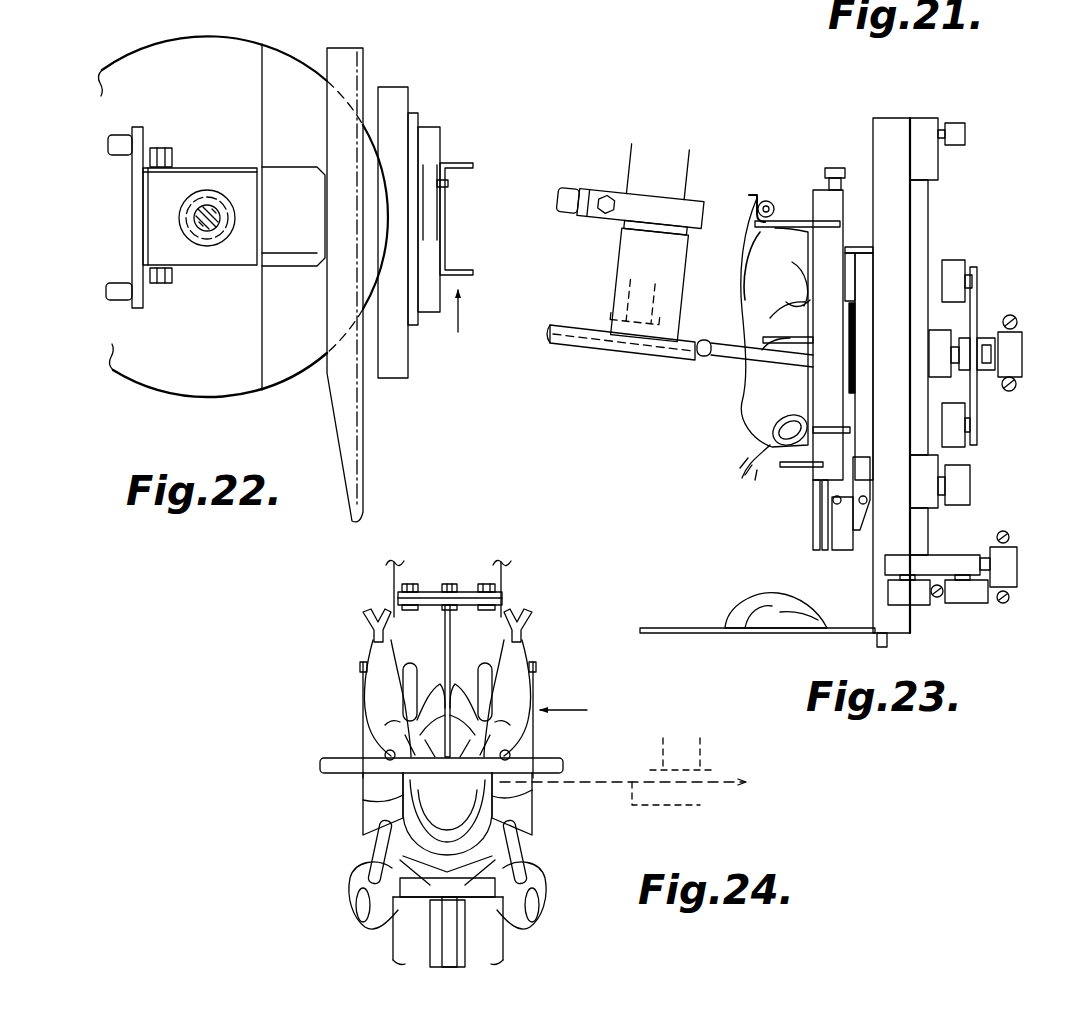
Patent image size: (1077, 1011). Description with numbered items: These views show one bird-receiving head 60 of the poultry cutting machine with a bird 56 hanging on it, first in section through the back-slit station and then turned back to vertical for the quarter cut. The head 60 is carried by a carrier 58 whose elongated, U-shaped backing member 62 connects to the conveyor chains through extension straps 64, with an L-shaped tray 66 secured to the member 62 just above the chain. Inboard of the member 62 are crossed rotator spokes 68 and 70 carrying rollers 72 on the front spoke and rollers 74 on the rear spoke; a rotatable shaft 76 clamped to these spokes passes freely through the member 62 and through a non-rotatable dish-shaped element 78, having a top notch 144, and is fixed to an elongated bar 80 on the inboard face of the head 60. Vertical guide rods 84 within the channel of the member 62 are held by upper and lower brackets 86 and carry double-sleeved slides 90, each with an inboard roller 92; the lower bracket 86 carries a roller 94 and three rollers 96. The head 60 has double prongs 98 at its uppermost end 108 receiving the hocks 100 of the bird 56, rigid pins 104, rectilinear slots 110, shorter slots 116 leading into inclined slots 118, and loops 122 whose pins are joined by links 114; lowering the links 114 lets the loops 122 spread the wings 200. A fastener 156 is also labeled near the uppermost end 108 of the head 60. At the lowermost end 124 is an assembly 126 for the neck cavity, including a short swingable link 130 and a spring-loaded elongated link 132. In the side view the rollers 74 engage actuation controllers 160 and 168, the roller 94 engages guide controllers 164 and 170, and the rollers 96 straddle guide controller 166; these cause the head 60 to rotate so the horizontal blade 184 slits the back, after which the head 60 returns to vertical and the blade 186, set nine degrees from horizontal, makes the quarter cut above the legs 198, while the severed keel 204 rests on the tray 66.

In FIG. 23, the bird 56 is at (746, 403).
In FIG. 24, the bird 56 is at (365, 703).
In FIG. 22, the carrier 58 is at (466, 160).
In FIG. 23, the carrier 58 is at (872, 118).
In FIG. 24, the carrier 58 is at (392, 563).
In FIG. 22, the bird-receiving head 60 is at (403, 85).
In FIG. 23, the bird-receiving head 60 is at (805, 257).
In FIG. 24, the bird-receiving head 60 is at (533, 692).
In FIG. 22, the backing member 62 is at (443, 264).
In FIG. 23, the backing member 62 is at (925, 122).
In FIG. 24, the backing member 62 is at (398, 944).
In FIG. 23, the extension strap 64 is at (876, 642).
In FIG. 23, the tray 66 is at (689, 634).
In FIG. 23, the front rotator spoke 68 is at (970, 390).
In FIG. 23, the rear rotator spoke 70 is at (1010, 393).
In FIG. 23, the roller 72 is at (963, 259).
In FIG. 23, the roller 74 is at (1018, 331).
In FIG. 23, the rotatable shaft 76 is at (952, 346).
In FIG. 22, the dish-shaped element 78 is at (437, 133).
In FIG. 23, the dish-shaped element 78 is at (867, 277).
In FIG. 22, the elongated bar 80 is at (410, 320).
In FIG. 23, the elongated bar 80 is at (855, 252).
In FIG. 23, the guide rod 84 is at (925, 188).
In FIG. 23, the bracket 86 is at (960, 560).
In FIG. 23, the slide 90 is at (933, 160).
In FIG. 23, the roller 92 is at (965, 130).
In FIG. 23, the roller 94 is at (1014, 546).
In FIG. 23, the roller 96 is at (890, 592).
In FIG. 23, the double prong 98 is at (748, 207).
In FIG. 24, the double prong 98 is at (365, 630).
In FIG. 23, the hock 100 is at (766, 201).
In FIG. 24, the hock 100 is at (380, 620).
In FIG. 23, the rigid pin 104 is at (757, 335).
In FIG. 24, the rigid pin 104 is at (387, 752).
In FIG. 23, the uppermost end 108 is at (817, 190).
In FIG. 24, the uppermost end 108 is at (470, 588).
In FIG. 24, the rectilinear slot 110 is at (416, 672).
In FIG. 23, the link 114 is at (858, 402).
In FIG. 24, the slot 116 is at (372, 812).
In FIG. 24, the inclined slot 118 is at (370, 839).
In FIG. 23, the loop 122 is at (758, 452).
In FIG. 24, the loop 122 is at (354, 877).
In FIG. 24, the lowermost end 124 is at (520, 912).
In FIG. 23, the assembly 126 is at (812, 538).
In FIG. 24, the assembly 126 is at (505, 953).
In FIG. 23, the swingable link 130 is at (852, 522).
In FIG. 23, the elongated link 132 is at (815, 517).
In FIG. 22, the top notch 144 is at (444, 184).
In FIG. 23, the bolt 156 is at (858, 152).
In FIG. 24, the bolt 156 is at (428, 584).
In FIG. 23, the actuation controller 160 is at (1004, 318).
In FIG. 23, the guide controller 164 is at (997, 538).
In FIG. 23, the guide controller 166 is at (940, 603).
In FIG. 23, the actuation controller 168 is at (1010, 406).
In FIG. 23, the guide controller 170 is at (1005, 604).
In FIG. 22, the blade 184 is at (272, 64).
In FIG. 23, the blade 186 is at (712, 360).
In FIG. 24, the blade 186 is at (700, 785).
In FIG. 23, the leg 198 is at (758, 245).
In FIG. 24, the leg 198 is at (378, 667).
In FIG. 23, the wing 200 is at (757, 508).
In FIG. 24, the wing 200 is at (352, 902).
In FIG. 23, the keel 204 is at (740, 612).